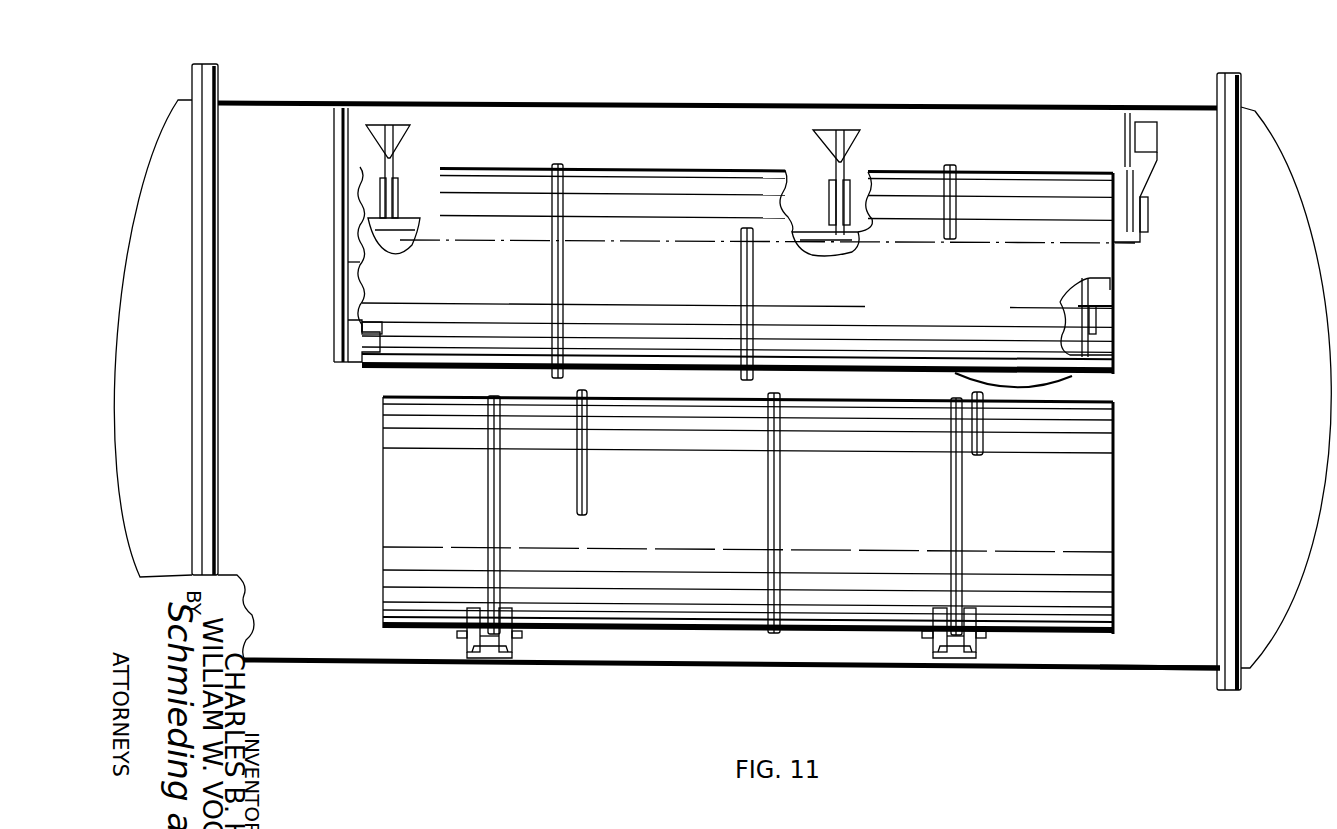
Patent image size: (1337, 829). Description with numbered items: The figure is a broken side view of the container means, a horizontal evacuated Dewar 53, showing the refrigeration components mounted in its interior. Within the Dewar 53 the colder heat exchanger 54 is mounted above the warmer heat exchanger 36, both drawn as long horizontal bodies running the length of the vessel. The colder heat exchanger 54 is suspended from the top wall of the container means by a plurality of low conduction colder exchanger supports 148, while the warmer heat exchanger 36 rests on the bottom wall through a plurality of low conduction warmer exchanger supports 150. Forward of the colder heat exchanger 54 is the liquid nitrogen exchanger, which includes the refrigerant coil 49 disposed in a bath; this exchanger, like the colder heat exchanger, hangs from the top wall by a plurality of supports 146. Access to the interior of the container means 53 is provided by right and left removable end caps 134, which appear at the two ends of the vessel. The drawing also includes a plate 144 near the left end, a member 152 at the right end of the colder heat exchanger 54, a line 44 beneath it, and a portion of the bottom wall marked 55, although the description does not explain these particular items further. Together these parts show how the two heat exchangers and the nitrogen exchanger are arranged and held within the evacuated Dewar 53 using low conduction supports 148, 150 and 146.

The removable end cap 134 is at (175, 116).
The vertical plate 144 is at (340, 182).
The support 146 is at (385, 153).
The refrigerant coil 49 is at (397, 229).
The colder heat exchanger 54 is at (990, 175).
The colder exchanger support 148 is at (1148, 137).
The support member 152 is at (1113, 327).
The conduit 44 is at (1073, 379).
The warmer heat exchanger 36 is at (1071, 640).
The warmer exchanger support 150 is at (505, 610).
The horizontal evacuated Dewar 53 is at (686, 670).
The shell wall 55 is at (1172, 654).